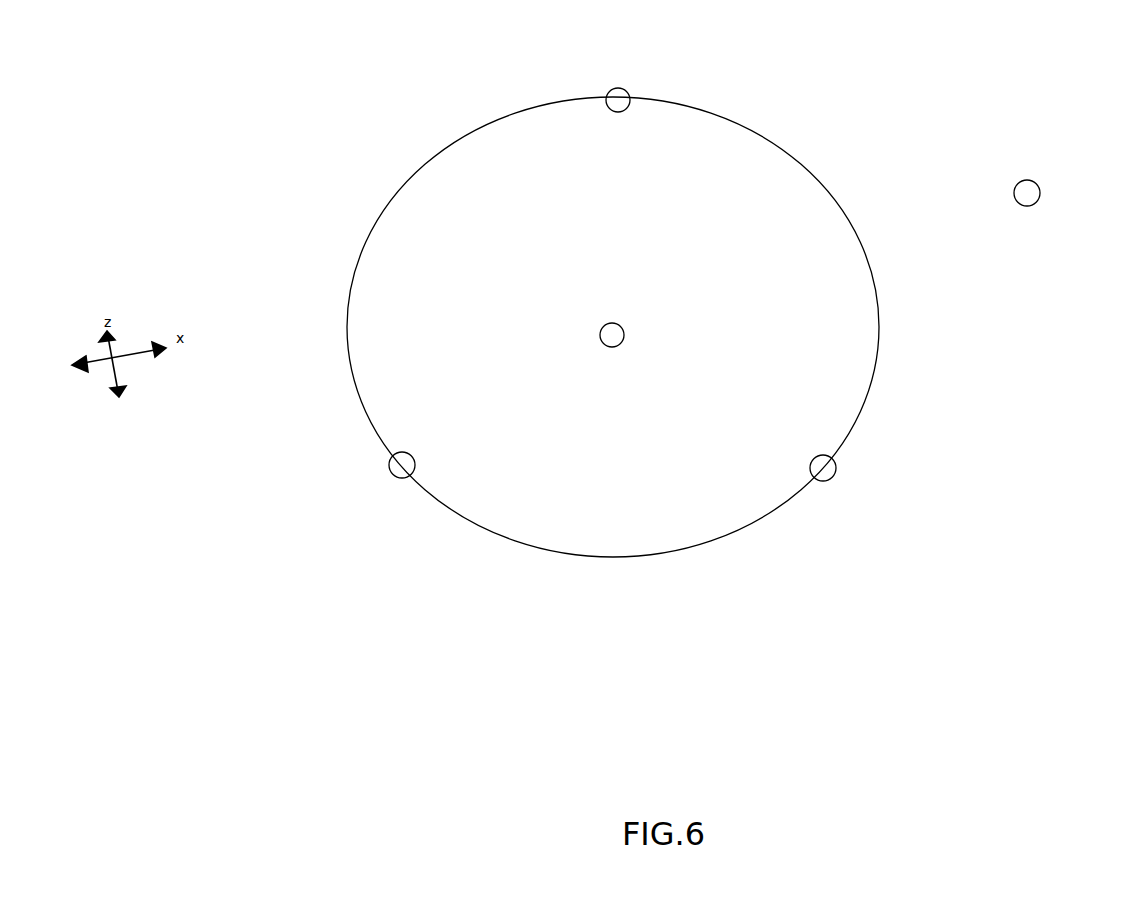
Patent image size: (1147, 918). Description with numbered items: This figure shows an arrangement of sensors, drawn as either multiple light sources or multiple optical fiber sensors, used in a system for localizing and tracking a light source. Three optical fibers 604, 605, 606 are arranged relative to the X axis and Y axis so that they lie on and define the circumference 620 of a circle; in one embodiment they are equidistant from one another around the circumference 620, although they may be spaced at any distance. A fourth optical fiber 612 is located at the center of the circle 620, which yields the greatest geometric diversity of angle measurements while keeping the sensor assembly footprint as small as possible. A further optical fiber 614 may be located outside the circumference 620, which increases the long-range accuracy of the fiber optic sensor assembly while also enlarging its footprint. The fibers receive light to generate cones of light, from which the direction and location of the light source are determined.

The optical fiber 604 is at (393, 478).
The optical fiber 605 is at (832, 480).
The optical fiber 606 is at (625, 88).
The fourth optical fiber 612 is at (624, 329).
The optical fiber 614 is at (1039, 184).
The circumference of the circle 620 is at (880, 339).